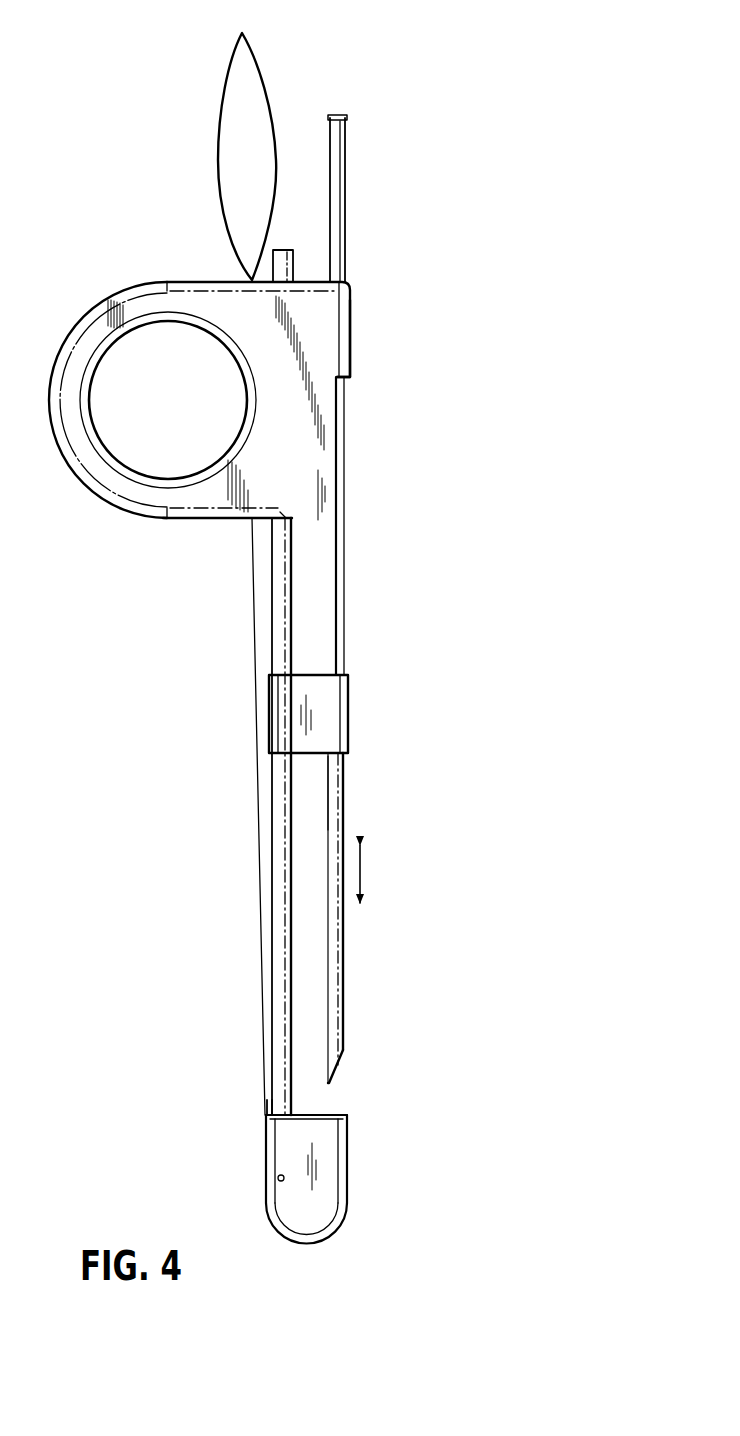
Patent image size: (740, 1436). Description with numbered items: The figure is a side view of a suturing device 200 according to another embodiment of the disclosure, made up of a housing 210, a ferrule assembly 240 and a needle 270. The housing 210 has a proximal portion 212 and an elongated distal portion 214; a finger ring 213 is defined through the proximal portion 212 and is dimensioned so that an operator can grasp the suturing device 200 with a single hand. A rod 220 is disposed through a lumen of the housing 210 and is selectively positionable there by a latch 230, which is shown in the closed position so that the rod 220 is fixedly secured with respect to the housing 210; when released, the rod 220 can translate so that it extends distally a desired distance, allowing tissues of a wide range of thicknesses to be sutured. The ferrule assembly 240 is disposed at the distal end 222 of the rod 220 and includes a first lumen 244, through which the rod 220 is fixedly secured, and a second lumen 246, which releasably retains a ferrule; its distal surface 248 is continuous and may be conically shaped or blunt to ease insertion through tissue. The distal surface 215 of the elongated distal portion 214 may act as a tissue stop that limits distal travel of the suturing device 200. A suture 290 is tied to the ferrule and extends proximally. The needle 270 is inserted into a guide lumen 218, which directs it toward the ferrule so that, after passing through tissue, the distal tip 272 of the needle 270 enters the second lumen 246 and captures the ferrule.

The suturing device 200 is at (121, 205).
The housing 210 is at (208, 521).
The proximal portion 212 is at (80, 481).
The finger ring 213 is at (119, 362).
The elongated distal portion 214 is at (316, 602).
The distal surface 215 is at (311, 762).
The guide lumen 218 is at (353, 332).
The rod 220 is at (272, 852).
The distal end 222 is at (272, 1098).
The latch 230 is at (270, 733).
The ferrule assembly 240 is at (402, 1243).
The first lumen 244 is at (260, 1108).
The second lumen 246 is at (346, 1108).
The distal surface 248 is at (307, 1237).
The needle 270 is at (343, 968).
The distal tip 272 is at (330, 1080).
The suture 290 is at (253, 608).